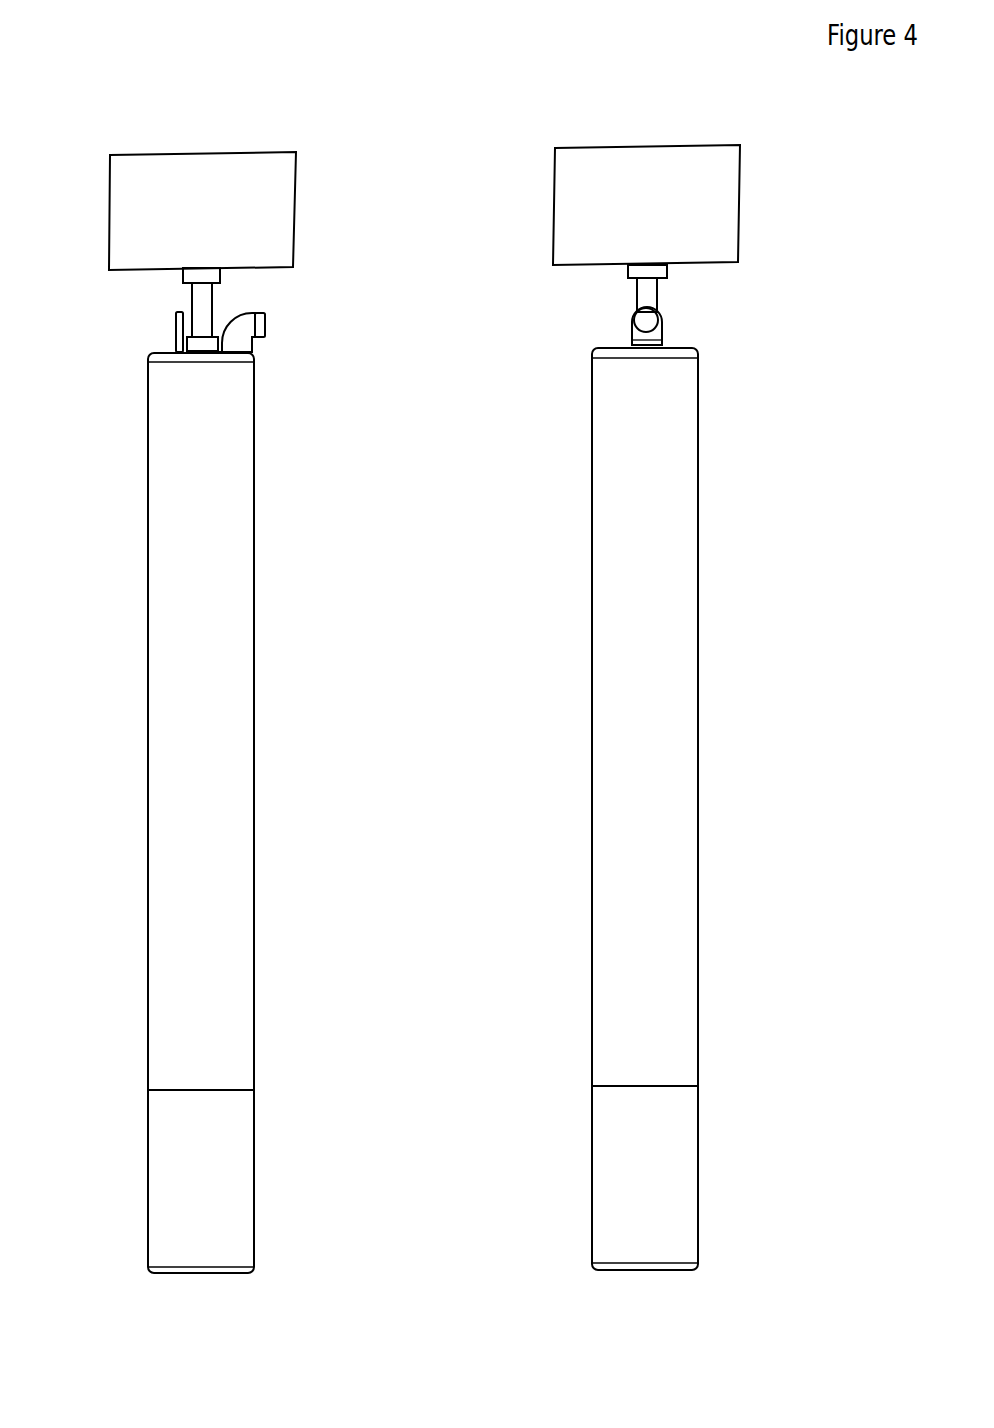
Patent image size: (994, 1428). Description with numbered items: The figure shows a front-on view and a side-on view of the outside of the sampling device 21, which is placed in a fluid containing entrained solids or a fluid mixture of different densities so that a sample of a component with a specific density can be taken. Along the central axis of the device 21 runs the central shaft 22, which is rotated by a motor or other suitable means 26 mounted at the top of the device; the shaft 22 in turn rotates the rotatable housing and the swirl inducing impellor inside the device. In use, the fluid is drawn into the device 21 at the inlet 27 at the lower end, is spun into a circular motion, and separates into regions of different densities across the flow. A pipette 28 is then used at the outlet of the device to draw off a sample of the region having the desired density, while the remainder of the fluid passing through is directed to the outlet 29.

The sampling device 21 is at (638, 703).
The central shaft 22 is at (212, 302).
The motor 26 is at (295, 220).
The inlet 27 is at (638, 1270).
The pipette 28 is at (177, 323).
The outlet 29 is at (265, 325).